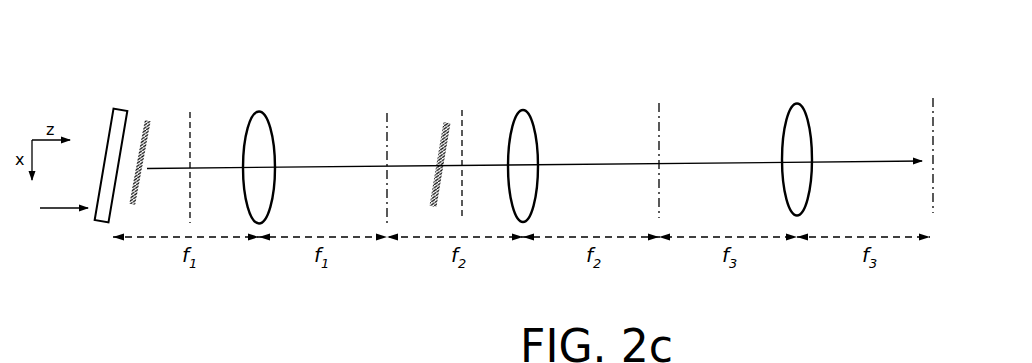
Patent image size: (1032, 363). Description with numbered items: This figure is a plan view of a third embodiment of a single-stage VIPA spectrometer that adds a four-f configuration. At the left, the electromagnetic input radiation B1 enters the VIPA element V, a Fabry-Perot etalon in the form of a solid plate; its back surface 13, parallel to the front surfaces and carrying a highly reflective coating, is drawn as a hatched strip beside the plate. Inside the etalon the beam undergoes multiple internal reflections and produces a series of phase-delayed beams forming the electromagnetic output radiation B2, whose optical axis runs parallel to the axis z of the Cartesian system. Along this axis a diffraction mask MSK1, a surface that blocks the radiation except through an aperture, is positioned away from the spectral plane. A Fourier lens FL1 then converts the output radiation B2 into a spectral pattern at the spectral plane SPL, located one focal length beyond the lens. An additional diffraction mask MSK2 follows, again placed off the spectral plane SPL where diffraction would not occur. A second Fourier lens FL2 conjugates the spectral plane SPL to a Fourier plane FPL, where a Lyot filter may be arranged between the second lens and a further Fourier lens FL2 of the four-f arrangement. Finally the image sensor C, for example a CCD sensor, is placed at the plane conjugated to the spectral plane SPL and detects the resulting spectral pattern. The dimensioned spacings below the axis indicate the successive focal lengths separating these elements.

The VIPA element V is at (100, 143).
The back surface 13 is at (133, 125).
The electromagnetic input radiation B1 is at (52, 212).
The electromagnetic output radiation B2 is at (172, 172).
The diffraction mask MSK1 is at (191, 140).
The Fourier lens FL1 is at (274, 147).
The spectral plane SPL is at (386, 137).
The additional diffraction mask MSK2 is at (464, 133).
The second Fourier lens FL2 is at (538, 135).
The Fourier plane FPL is at (660, 128).
The image sensor C is at (932, 127).